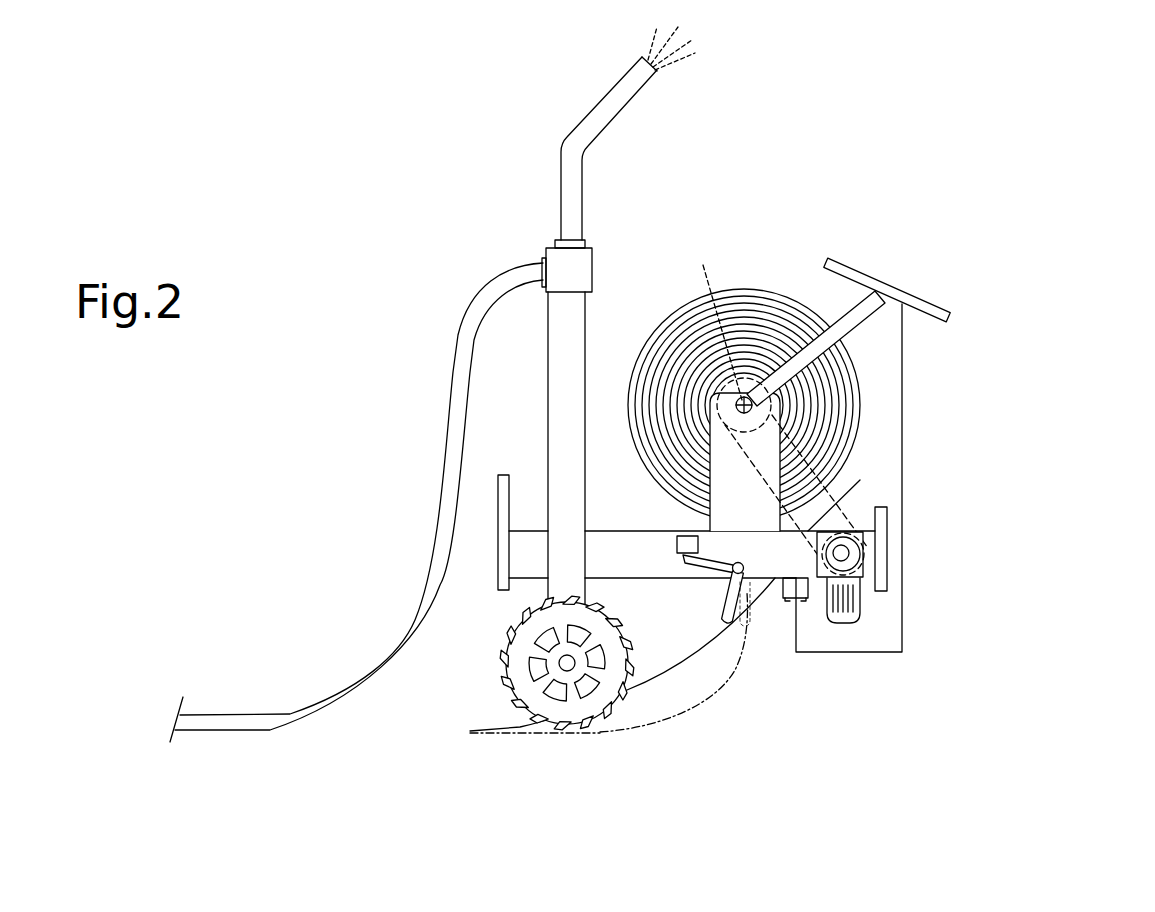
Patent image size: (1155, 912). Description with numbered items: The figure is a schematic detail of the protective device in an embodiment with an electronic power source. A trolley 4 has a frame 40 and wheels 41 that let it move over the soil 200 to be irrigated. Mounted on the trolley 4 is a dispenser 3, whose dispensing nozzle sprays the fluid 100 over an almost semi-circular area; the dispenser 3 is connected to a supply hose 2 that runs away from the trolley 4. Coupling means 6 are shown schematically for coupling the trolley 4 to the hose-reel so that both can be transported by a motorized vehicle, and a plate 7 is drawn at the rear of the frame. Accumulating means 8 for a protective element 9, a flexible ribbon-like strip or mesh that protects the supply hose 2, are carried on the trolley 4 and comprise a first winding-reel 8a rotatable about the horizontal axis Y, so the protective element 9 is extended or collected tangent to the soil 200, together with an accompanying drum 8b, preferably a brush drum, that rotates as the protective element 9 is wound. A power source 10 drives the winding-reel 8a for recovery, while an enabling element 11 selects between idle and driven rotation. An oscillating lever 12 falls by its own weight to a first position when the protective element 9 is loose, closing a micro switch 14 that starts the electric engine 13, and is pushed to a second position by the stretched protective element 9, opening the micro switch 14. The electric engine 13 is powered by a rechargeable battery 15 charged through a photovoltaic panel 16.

The supply hose 2 is at (453, 372).
The dispenser 3 is at (565, 153).
The trolley 4 is at (503, 708).
The coupling means 6 is at (497, 497).
The rear support plate 7 is at (890, 565).
The accumulating means 8 is at (727, 277).
The first winding-reel 8a is at (795, 387).
The accompanying drum 8b is at (860, 520).
The protective element 9 is at (747, 683).
The power source 10 is at (897, 660).
The enabling element 11 is at (847, 500).
The oscillating lever 12 is at (718, 608).
The electric engine 13 is at (873, 607).
The micro switch 14 is at (678, 527).
The rechargeable battery 15 is at (807, 610).
The photovoltaic panel 16 is at (928, 287).
The frame 40 is at (600, 568).
The wheels 41 is at (560, 717).
The fluid 100 is at (724, 50).
The soil 200 is at (967, 808).